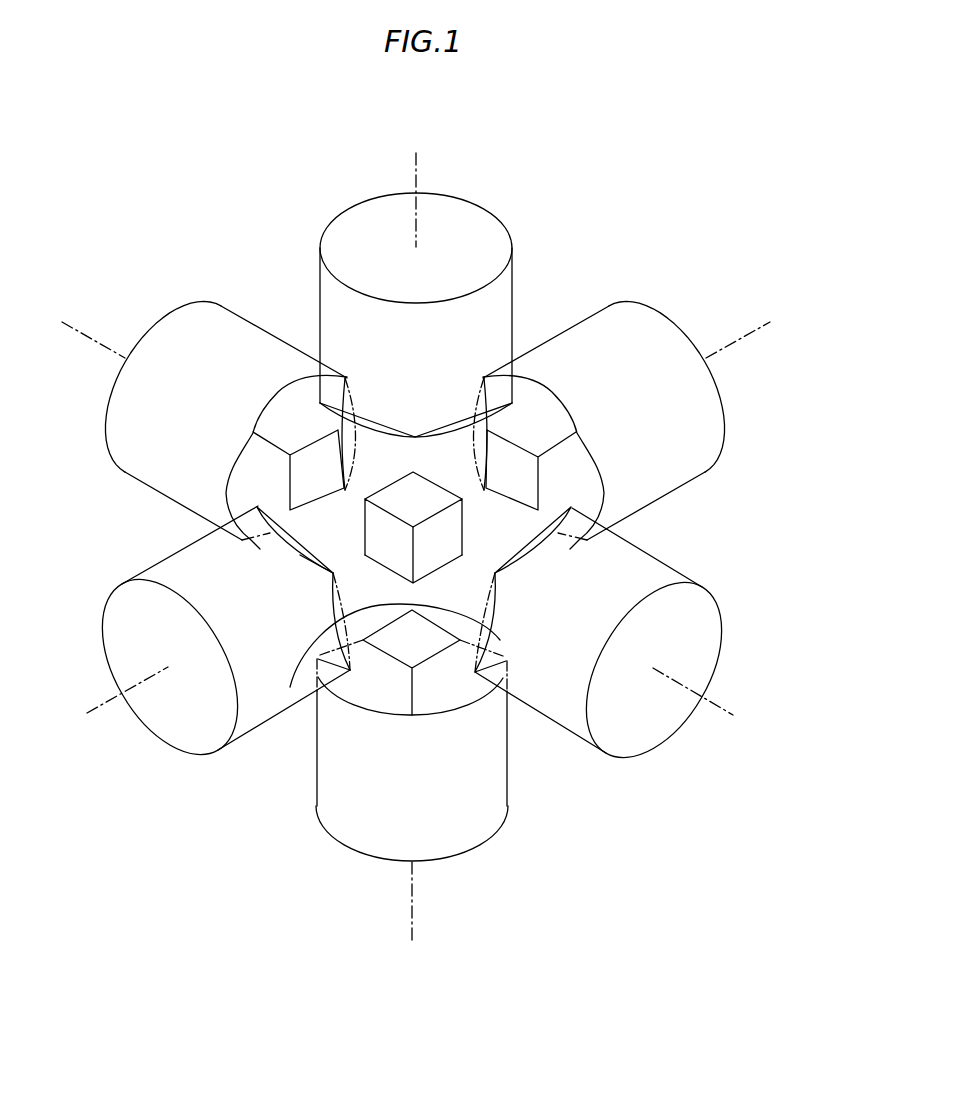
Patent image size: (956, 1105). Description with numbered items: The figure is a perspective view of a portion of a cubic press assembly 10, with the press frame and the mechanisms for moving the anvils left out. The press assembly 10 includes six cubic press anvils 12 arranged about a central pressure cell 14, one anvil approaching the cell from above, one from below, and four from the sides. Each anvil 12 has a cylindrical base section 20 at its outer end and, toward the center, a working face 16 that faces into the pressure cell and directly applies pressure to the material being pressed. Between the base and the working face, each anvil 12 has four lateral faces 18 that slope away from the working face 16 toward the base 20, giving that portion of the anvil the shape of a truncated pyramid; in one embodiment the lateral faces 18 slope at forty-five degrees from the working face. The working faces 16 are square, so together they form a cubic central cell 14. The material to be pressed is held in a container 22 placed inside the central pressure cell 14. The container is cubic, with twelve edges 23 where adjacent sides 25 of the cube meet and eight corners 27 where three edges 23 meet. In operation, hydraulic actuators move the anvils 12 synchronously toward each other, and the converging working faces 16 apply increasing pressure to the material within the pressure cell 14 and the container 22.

The cubic press assembly 10 is at (617, 189).
The cubic press anvil 12 is at (476, 201).
The central pressure cell 14 is at (379, 594).
The working face 16 is at (328, 456).
The lateral face 18 is at (302, 410).
The cylindrical base section 20 is at (703, 387).
The container 22 is at (333, 573).
The edge 23 is at (420, 480).
The side 25 is at (400, 495).
The corner 27 is at (413, 468).